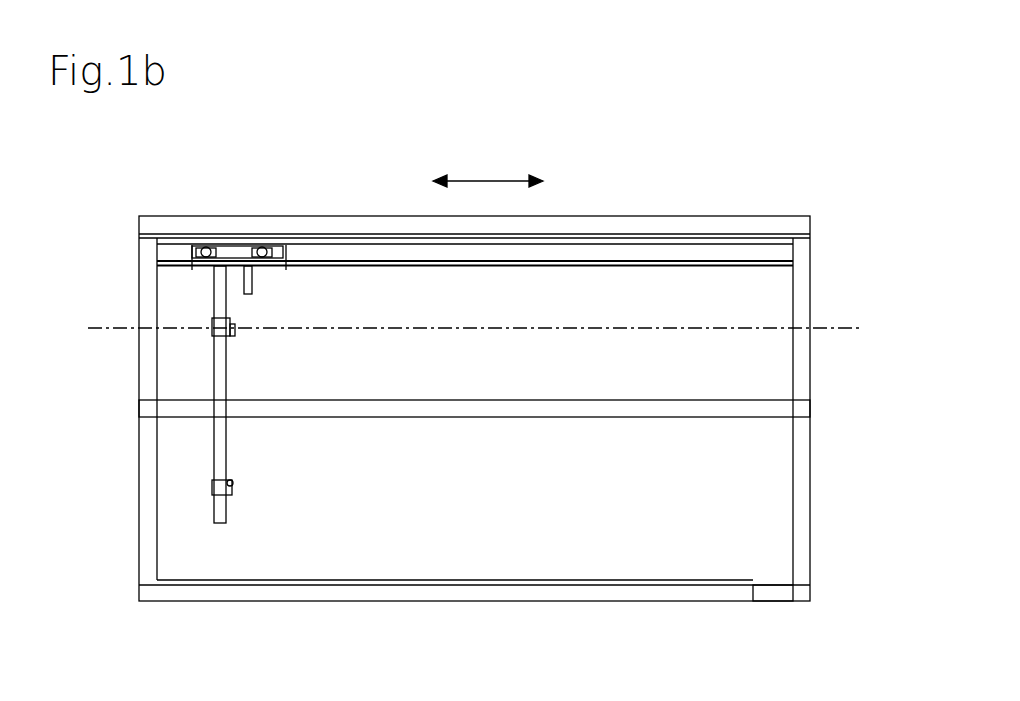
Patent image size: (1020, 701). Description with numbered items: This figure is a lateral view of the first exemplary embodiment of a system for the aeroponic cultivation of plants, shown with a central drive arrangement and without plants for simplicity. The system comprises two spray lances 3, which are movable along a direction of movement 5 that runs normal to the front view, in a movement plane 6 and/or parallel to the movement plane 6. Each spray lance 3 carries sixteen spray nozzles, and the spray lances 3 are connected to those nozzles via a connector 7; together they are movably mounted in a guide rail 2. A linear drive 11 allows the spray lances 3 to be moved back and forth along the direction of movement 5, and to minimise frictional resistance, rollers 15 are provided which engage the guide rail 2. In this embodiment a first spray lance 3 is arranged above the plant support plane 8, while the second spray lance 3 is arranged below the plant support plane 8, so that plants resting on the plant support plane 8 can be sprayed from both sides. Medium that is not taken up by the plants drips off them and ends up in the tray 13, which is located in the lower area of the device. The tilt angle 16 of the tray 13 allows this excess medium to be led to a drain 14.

The guide rail 2 is at (738, 254).
The spray lance 3 is at (232, 495).
The direction of movement 5 is at (485, 181).
The movement plane 6 is at (835, 328).
The connector 7 is at (220, 365).
The plant support plane 8 is at (795, 410).
The linear drive 11 is at (232, 253).
The tray 13 is at (452, 583).
The drain 14 is at (768, 593).
The roller 15 is at (185, 244).
The tilt angle 16 is at (325, 583).